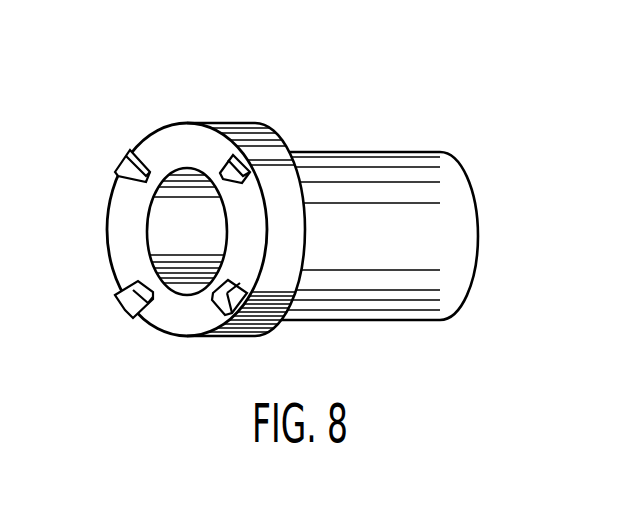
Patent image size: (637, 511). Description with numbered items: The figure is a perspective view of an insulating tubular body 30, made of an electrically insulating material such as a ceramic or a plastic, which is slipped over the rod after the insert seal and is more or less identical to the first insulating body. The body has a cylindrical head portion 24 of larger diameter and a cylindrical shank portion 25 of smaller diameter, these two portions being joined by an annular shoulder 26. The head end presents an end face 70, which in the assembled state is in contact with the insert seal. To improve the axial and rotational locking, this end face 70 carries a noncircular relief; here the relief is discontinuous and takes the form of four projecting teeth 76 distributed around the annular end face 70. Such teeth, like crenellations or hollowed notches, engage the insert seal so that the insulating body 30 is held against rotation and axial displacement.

The cylindrical head portion 24 is at (252, 148).
The cylindrical shank portion 25 is at (445, 222).
The annular shoulder 26 is at (270, 133).
The second insulating tubular body 30 is at (357, 131).
The end face 70 is at (127, 217).
The projecting teeth 76 is at (130, 303).